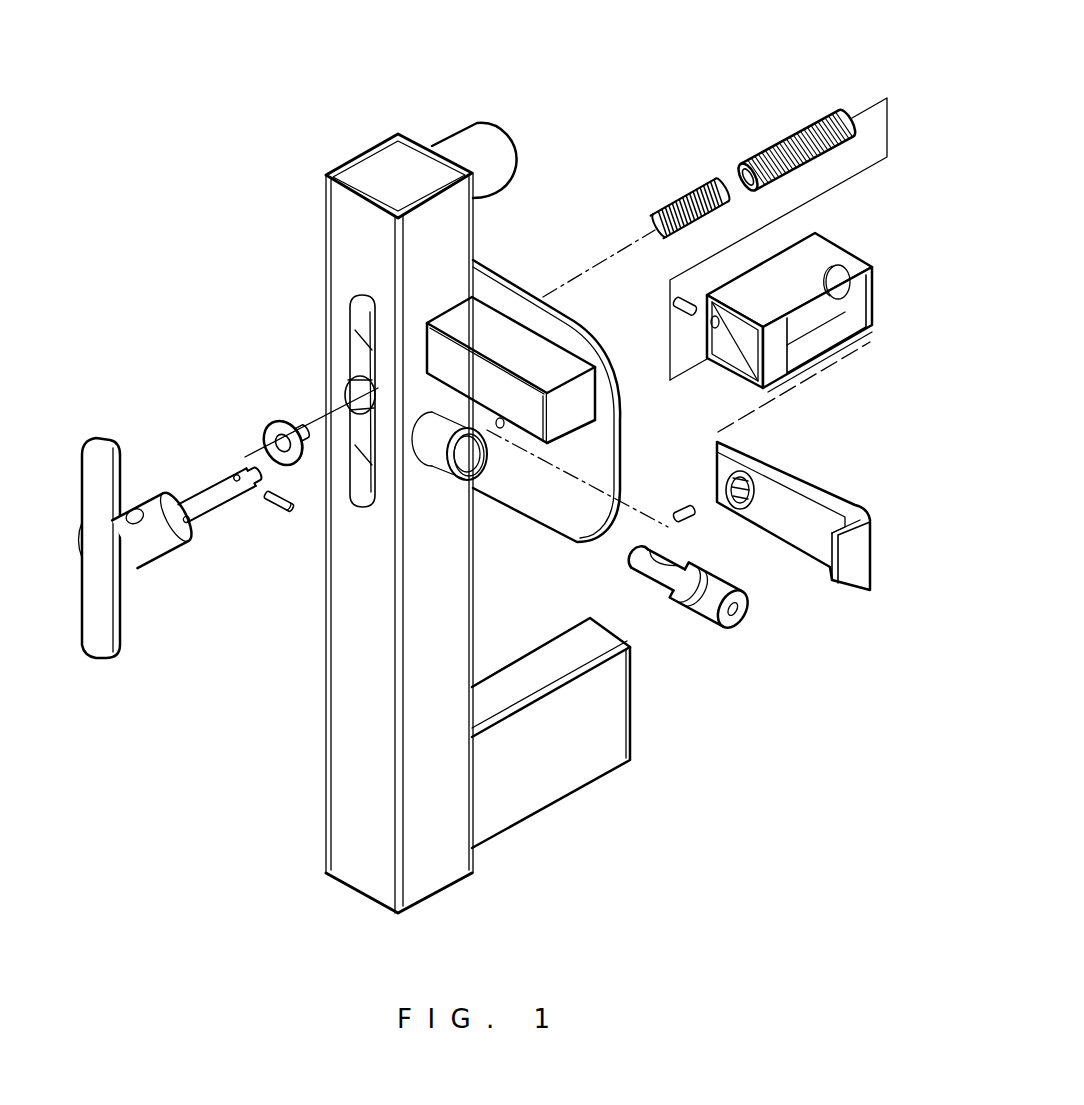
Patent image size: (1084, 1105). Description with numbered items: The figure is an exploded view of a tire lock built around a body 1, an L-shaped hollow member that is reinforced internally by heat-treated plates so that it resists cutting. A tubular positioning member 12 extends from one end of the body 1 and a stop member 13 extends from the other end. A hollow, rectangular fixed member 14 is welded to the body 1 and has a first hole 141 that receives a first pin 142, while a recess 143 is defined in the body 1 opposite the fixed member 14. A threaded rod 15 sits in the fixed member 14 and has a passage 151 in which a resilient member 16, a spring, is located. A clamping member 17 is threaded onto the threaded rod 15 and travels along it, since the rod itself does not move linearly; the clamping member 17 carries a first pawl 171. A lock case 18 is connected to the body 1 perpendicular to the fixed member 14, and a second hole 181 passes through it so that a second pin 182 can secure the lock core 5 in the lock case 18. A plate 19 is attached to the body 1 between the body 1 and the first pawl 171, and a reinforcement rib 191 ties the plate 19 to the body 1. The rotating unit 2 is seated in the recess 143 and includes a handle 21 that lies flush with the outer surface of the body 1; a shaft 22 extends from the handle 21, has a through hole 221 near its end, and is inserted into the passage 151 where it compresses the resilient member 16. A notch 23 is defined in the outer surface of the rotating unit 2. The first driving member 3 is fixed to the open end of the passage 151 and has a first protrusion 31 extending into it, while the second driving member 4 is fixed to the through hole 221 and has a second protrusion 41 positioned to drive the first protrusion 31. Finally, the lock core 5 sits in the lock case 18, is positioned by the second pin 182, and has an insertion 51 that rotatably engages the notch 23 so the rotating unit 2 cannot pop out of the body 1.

The body 1 is at (340, 655).
The tubular positioning member 12 is at (472, 130).
The stop member 13 is at (578, 765).
The fixed member 14 is at (743, 287).
The first hole 141 is at (710, 323).
The first pin 142 is at (672, 303).
The recess 143 is at (355, 388).
The threaded rod 15 is at (771, 106).
The passage 151 is at (748, 160).
The resilient member 16 is at (698, 188).
The clamping member 17 is at (802, 536).
The first pawl 171 is at (841, 585).
The lock case 18 is at (433, 455).
The second hole 181 is at (485, 462).
The second pin 182 is at (685, 508).
The plate 19 is at (497, 292).
The reinforcement rib 191 is at (458, 318).
The rotating unit 2 is at (181, 477).
The handle 21 is at (103, 623).
The shaft 22 is at (195, 401).
The through hole 221 is at (243, 475).
The notch 23 is at (135, 510).
The first driving member 3 is at (290, 391).
The first protrusion 31 is at (308, 430).
The second driving member 4 is at (281, 539).
The second protrusion 41 is at (290, 512).
The lock core 5 is at (696, 611).
The insertion 51 is at (658, 577).